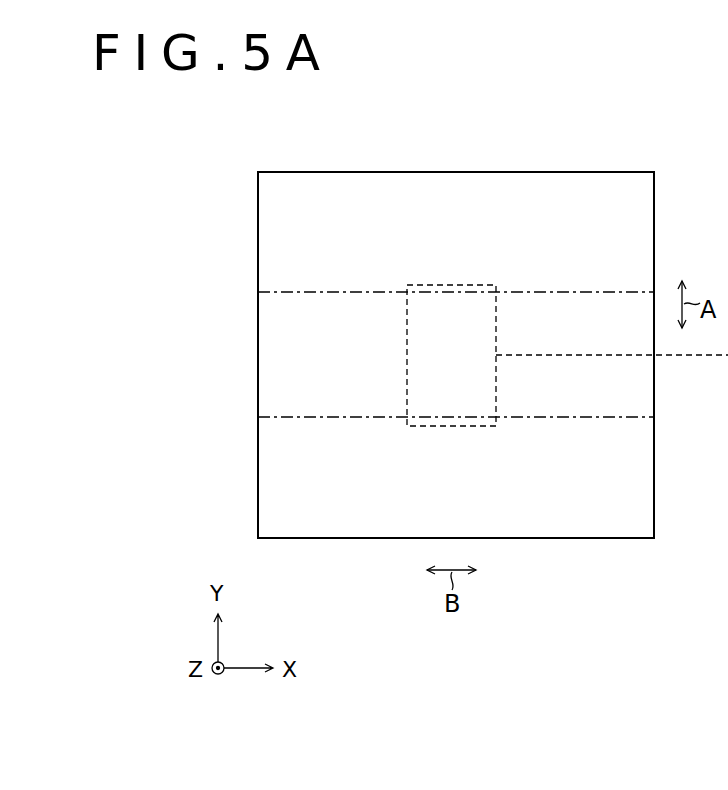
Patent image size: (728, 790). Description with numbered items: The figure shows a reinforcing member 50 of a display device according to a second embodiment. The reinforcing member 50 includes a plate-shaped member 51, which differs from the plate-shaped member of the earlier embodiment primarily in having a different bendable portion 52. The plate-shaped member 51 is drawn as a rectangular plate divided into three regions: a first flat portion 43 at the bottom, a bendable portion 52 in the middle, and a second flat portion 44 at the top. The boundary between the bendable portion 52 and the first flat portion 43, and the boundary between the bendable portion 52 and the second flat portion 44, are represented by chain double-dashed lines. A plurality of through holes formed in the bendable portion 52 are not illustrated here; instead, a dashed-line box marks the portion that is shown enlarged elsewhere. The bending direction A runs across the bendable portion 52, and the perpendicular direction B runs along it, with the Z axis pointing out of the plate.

The reinforcing member 50 is at (259, 150).
The plate-shaped member 51 is at (201, 205).
The second flat portion 44 is at (273, 226).
The bendable portion 52 is at (273, 353).
The first flat portion 43 is at (273, 483).